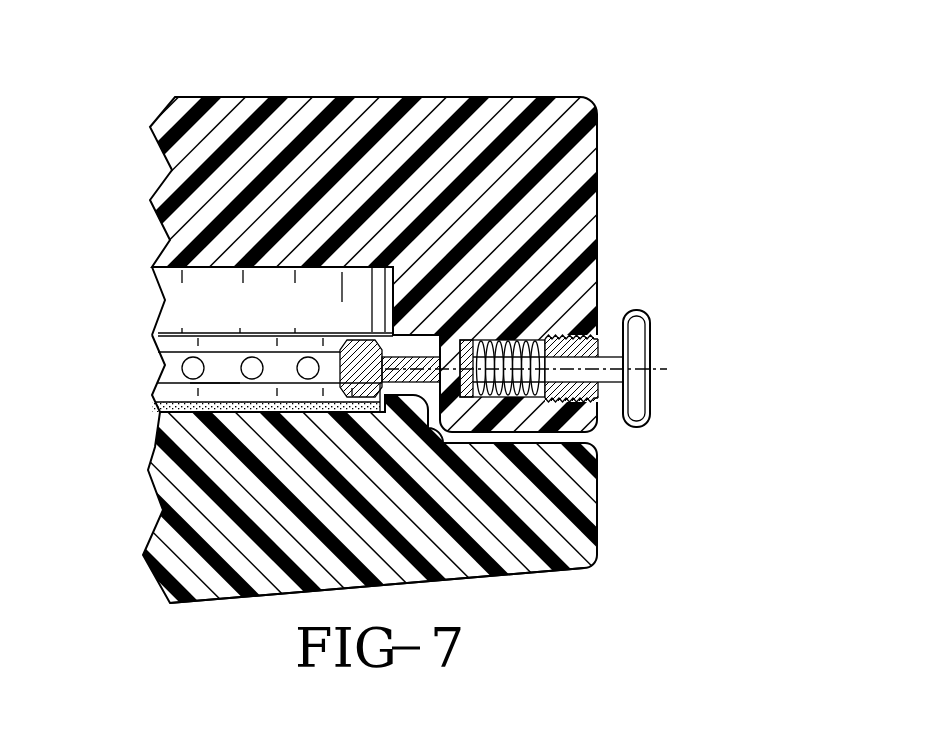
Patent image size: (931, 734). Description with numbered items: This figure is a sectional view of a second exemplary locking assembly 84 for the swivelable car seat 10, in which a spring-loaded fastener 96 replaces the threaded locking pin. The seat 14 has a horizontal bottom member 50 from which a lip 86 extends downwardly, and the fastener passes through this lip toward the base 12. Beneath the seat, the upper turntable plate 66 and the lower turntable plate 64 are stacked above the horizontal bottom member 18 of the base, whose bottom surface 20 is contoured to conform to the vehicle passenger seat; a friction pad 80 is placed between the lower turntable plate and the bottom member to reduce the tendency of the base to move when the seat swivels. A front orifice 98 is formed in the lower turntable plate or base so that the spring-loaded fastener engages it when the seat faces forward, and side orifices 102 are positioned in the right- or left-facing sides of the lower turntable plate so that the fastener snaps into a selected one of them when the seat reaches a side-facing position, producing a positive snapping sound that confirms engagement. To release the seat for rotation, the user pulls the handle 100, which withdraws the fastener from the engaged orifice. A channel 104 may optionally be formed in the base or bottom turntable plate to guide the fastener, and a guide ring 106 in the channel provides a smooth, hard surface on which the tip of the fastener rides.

The swivelable car seat 10 is at (734, 118).
The base 12 is at (607, 521).
The seat 14 is at (604, 160).
The horizontal bottom member 18 is at (180, 545).
The bottom surface 20 is at (517, 573).
The horizontal bottom member 50 is at (307, 108).
The lower turntable plate 64 is at (187, 342).
The upper turntable plate 66 is at (215, 287).
The friction pad 80 is at (162, 407).
The locking assembly 84 is at (660, 409).
The lip 86 is at (583, 307).
The spring-loaded fastener 96 is at (490, 343).
The front orifice 98 is at (371, 397).
The handle 100 is at (638, 345).
The side orifices 102 is at (302, 365).
The channel 104 is at (211, 379).
The guide ring 106 is at (166, 372).